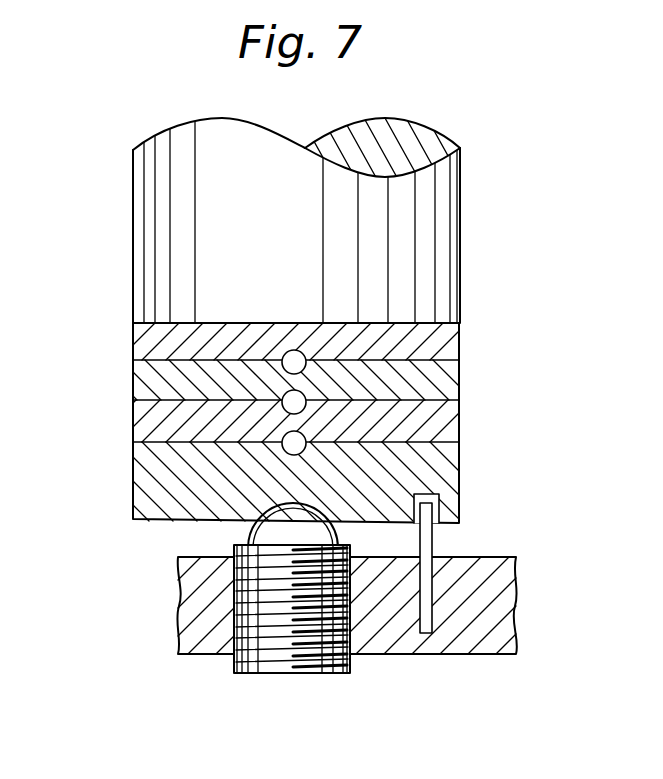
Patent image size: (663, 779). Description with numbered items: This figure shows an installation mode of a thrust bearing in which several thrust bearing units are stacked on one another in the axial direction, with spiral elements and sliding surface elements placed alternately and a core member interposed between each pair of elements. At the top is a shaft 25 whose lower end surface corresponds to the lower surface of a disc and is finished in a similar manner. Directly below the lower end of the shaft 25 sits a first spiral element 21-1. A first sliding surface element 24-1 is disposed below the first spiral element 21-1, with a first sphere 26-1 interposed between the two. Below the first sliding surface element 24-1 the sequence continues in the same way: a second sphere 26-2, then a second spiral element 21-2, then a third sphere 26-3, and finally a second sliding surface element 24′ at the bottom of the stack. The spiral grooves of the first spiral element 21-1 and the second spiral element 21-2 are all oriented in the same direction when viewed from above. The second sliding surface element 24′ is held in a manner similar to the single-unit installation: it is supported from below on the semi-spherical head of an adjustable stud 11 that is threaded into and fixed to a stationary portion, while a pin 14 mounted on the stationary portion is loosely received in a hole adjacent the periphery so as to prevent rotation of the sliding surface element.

The shaft 25 is at (445, 201).
The first spiral element 21-1 is at (447, 343).
The first sphere 26-1 is at (304, 369).
The first sliding surface element 24-1 is at (447, 397).
The second sphere 26-2 is at (283, 410).
The second spiral element 21-2 is at (448, 437).
The third sphere 26-3 is at (285, 452).
The second sliding surface element 24′ is at (447, 482).
The pin 14 is at (433, 539).
The adjustable stud 11 is at (287, 673).